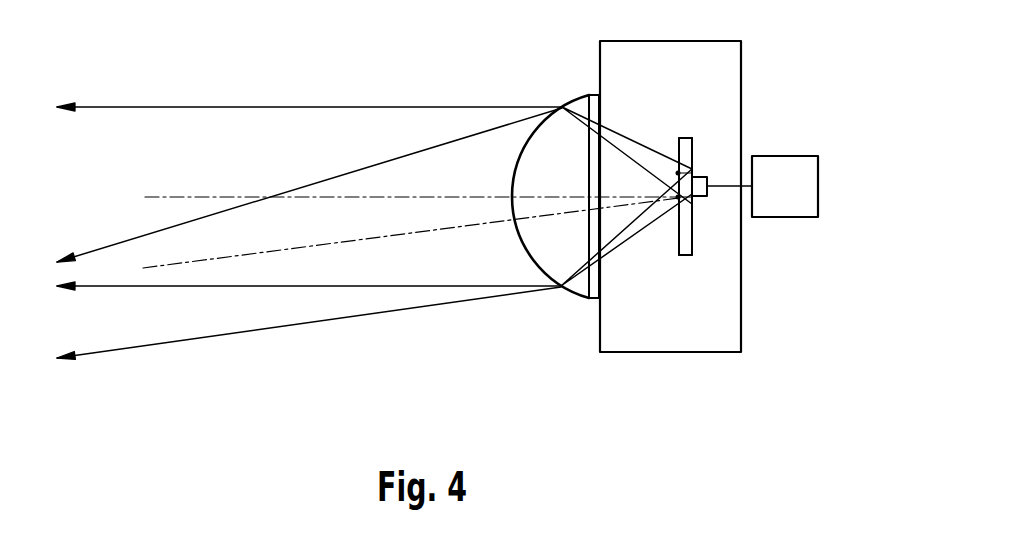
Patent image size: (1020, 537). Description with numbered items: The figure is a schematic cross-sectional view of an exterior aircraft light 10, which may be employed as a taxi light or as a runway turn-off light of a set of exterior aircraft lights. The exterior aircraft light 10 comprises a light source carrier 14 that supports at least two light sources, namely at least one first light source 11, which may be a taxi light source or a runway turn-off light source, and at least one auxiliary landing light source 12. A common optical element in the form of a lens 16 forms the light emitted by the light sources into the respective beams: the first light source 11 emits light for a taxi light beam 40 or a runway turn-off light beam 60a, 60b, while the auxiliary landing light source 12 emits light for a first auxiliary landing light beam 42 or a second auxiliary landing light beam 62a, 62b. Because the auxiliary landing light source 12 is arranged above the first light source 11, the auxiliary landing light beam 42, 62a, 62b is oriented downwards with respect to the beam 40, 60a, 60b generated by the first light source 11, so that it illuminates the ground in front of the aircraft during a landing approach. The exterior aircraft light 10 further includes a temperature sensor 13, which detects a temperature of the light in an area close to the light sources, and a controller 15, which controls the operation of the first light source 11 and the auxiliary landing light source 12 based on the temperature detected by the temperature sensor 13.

The exterior aircraft light 10 is at (782, 110).
The first light source 11 is at (692, 198).
The auxiliary landing light source 12 is at (692, 170).
The temperature sensor 13 is at (707, 178).
The light source carrier 14 is at (679, 241).
The controller 15 is at (806, 208).
The lens 16 is at (559, 317).
The taxi light beam 40 is at (374, 135).
The runway turn-off light beam 60a is at (374, 135).
The runway turn-off light beam 60b is at (229, 84).
The first auxiliary landing light beam 42 is at (374, 307).
The second auxiliary landing light beam 62a is at (374, 307).
The second auxiliary landing light beam 62b is at (230, 367).